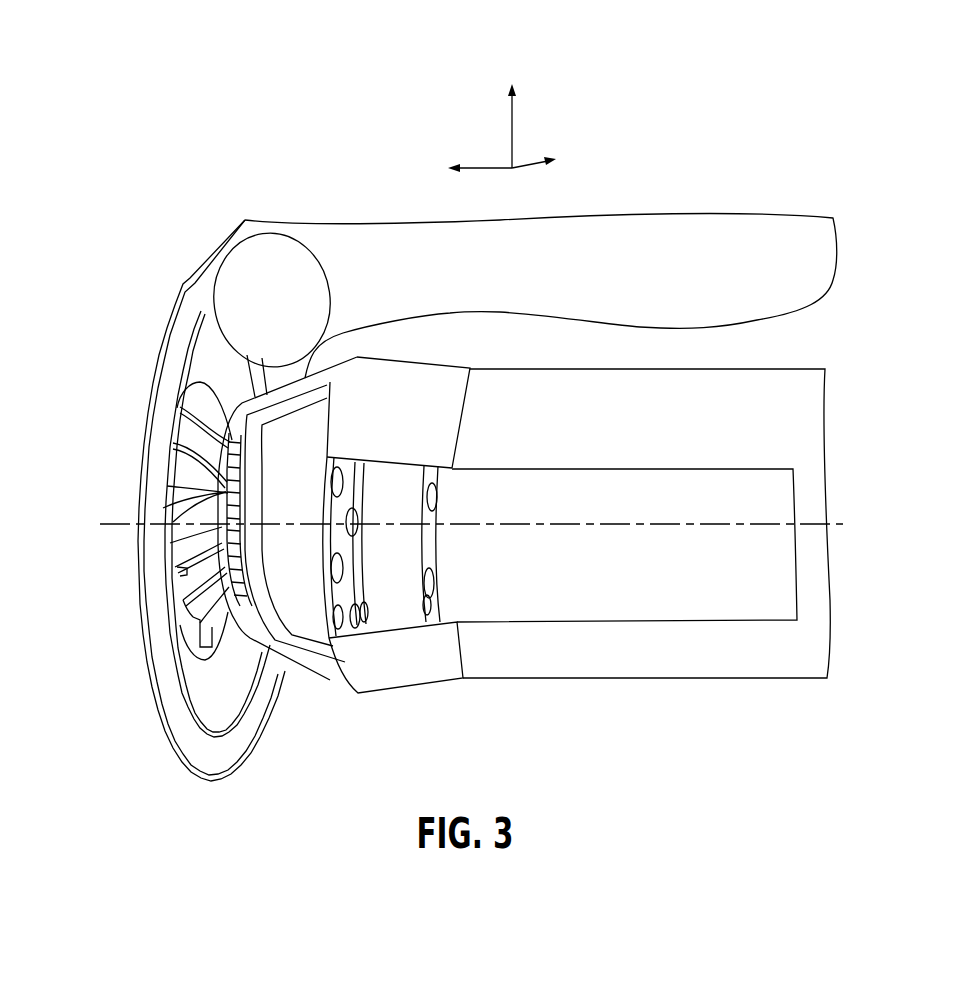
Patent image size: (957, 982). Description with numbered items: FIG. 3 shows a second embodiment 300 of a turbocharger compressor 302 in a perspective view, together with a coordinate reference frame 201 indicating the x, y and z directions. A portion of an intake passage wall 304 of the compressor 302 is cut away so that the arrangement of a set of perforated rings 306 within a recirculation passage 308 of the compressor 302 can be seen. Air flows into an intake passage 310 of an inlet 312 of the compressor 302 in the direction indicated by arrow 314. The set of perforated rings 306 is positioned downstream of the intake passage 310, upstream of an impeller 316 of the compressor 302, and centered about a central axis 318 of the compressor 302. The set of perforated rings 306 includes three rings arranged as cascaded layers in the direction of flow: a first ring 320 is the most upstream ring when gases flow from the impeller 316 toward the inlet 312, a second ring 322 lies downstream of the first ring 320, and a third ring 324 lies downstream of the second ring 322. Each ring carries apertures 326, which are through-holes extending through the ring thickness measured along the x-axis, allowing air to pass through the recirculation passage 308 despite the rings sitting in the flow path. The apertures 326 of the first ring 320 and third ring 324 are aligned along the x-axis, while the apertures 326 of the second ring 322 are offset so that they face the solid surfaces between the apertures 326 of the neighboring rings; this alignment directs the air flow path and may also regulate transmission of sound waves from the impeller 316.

The coordinate system 201 is at (440, 92).
The second embodiment 300 is at (177, 128).
The compressor 302 is at (268, 185).
The intake passage wall 304 is at (618, 390).
The set of perforated rings 306 is at (345, 675).
The recirculation passage 308 is at (327, 386).
The intake passage 310 is at (850, 440).
The inlet 312 is at (852, 345).
The arrow 314 is at (848, 513).
The impeller 316 is at (183, 568).
The central axis 318 is at (557, 523).
The first ring 320 is at (355, 570).
The second ring 322 is at (330, 488).
The third ring 324 is at (328, 592).
The apertures 326 is at (324, 522).